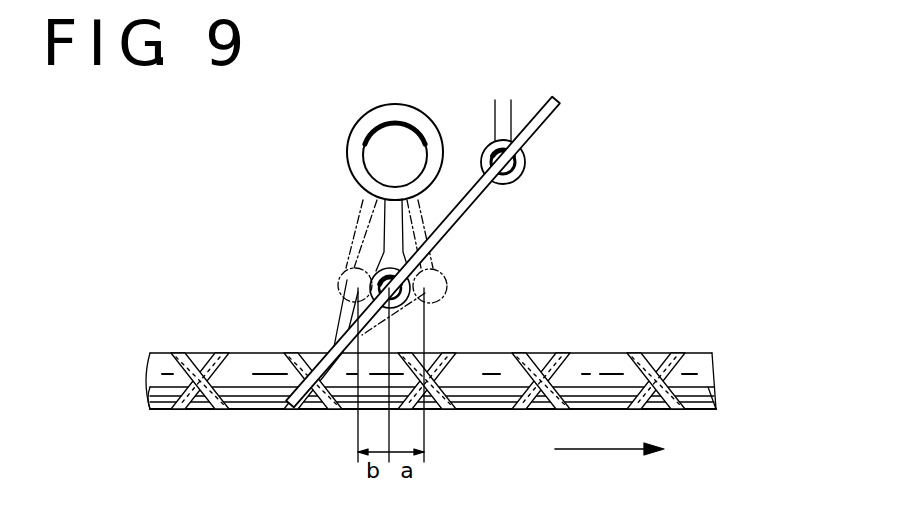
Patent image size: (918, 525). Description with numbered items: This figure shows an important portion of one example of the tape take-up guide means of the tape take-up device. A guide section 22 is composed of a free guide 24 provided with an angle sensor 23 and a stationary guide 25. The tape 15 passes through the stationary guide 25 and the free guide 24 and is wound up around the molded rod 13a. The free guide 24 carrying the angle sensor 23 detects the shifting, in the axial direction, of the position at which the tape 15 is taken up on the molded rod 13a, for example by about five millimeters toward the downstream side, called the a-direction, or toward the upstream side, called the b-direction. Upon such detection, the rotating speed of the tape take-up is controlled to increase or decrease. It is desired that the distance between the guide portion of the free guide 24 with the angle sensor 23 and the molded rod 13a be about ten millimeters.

The molded rod 13a is at (248, 360).
The tape 15 is at (473, 207).
The guide section 22 is at (318, 258).
The angle sensor 23 is at (368, 123).
The free guide 24 is at (388, 221).
The stationary guide 25 is at (497, 122).